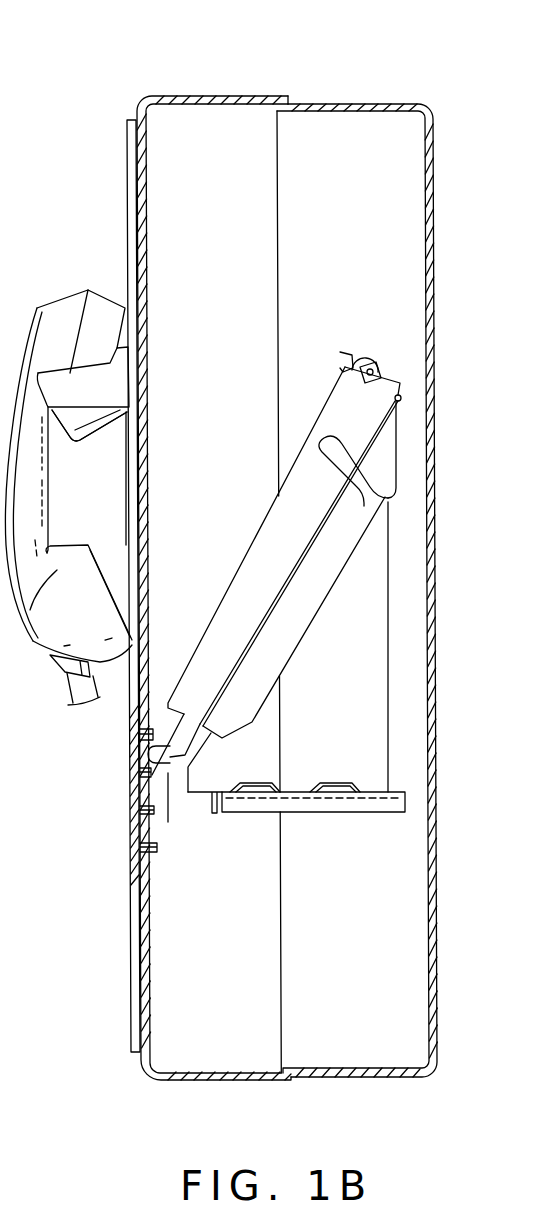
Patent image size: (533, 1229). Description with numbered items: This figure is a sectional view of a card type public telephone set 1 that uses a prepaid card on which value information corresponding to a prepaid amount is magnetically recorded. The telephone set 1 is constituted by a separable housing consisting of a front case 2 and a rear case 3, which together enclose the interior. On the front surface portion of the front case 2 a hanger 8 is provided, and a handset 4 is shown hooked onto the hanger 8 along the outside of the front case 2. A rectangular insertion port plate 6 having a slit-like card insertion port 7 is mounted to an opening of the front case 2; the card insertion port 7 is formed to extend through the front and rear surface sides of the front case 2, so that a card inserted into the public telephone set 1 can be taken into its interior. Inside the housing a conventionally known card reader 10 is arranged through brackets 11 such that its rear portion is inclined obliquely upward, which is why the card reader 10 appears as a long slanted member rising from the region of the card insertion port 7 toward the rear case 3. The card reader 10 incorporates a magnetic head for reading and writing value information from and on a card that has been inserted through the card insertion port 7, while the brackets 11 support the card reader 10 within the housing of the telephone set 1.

The card type public telephone set 1 is at (158, 78).
The front case 2 is at (215, 96).
The rear case 3 is at (343, 103).
The handset 4 is at (62, 313).
The insertion port plate 6 is at (127, 833).
The card insertion port 7 is at (131, 800).
The hanger 8 is at (65, 393).
The card reader 10 is at (254, 536).
The brackets 11 is at (336, 813).